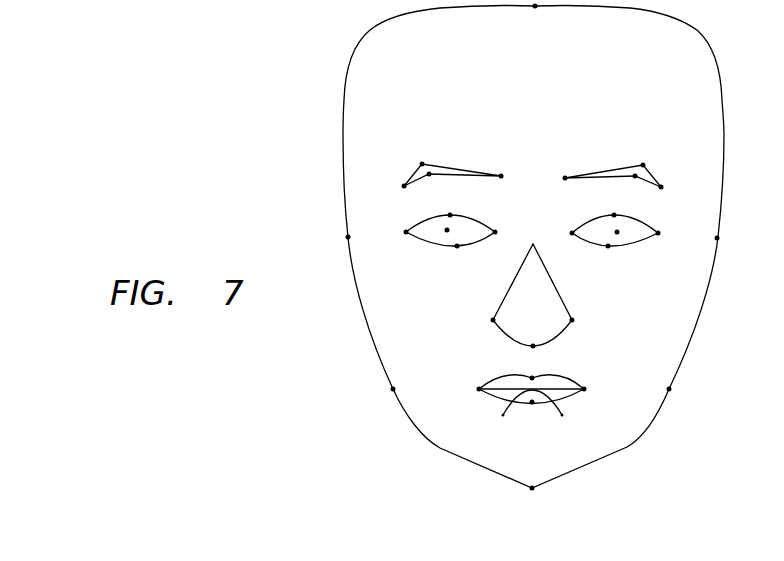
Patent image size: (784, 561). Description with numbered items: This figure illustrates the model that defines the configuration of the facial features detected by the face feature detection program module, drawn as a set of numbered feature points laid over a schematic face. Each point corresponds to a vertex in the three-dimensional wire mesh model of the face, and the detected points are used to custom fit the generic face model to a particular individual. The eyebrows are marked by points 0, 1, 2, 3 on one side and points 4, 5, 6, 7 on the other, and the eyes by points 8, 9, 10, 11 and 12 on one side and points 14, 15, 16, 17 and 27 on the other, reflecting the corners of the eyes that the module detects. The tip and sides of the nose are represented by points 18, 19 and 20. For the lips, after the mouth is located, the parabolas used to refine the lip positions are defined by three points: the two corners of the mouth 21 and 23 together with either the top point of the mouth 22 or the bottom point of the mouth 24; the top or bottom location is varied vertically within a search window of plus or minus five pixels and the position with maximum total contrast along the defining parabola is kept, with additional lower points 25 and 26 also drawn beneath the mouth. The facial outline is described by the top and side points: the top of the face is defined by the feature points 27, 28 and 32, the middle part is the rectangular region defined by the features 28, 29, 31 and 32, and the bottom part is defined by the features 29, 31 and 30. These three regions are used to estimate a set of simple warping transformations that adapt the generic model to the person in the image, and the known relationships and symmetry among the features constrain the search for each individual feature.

The left eyebrow outer corner feature point 0 is at (392, 185).
The left eyebrow upper feature point 1 is at (418, 150).
The left eyebrow inner end feature point 2 is at (508, 165).
The left eyebrow lower feature point 3 is at (426, 192).
The right eyebrow outer corner feature point 4 is at (673, 188).
The right eyebrow upper feature point 5 is at (649, 151).
The right eyebrow inner end feature point 6 is at (559, 165).
The right eyebrow lower feature point 7 is at (640, 193).
The left eye outer corner feature point 8 is at (395, 230).
The left eye upper eyelid feature point 9 is at (457, 200).
The left eye inner corner feature point 10 is at (509, 230).
The left eye lower eyelid feature point 11 is at (455, 260).
The left eye pupil feature point 12 is at (435, 231).
The right eye upper eyelid feature point 14 is at (604, 202).
The right eye inner corner feature point 15 is at (557, 231).
The right eye lower eyelid feature point 16 is at (612, 261).
The right eye pupil feature point 17 is at (630, 232).
The left nostril wing feature point 18 is at (478, 320).
The right nostril wing feature point 19 is at (586, 320).
The nose bottom feature point 20 is at (531, 332).
The corner of the mouth 21 is at (465, 388).
The top point of the mouth 22 is at (531, 364).
The corner of the mouth 23 is at (600, 388).
The bottom point of the mouth 24 is at (531, 415).
The left chin fold feature point 25 is at (490, 413).
The right chin fold feature point 26 is at (575, 413).
The feature point 27 is at (604, 125).
The feature point 28 is at (331, 240).
The feature point 29 is at (378, 391).
The feature point 30 is at (532, 471).
The feature point 31 is at (686, 391).
The feature point 32 is at (734, 240).